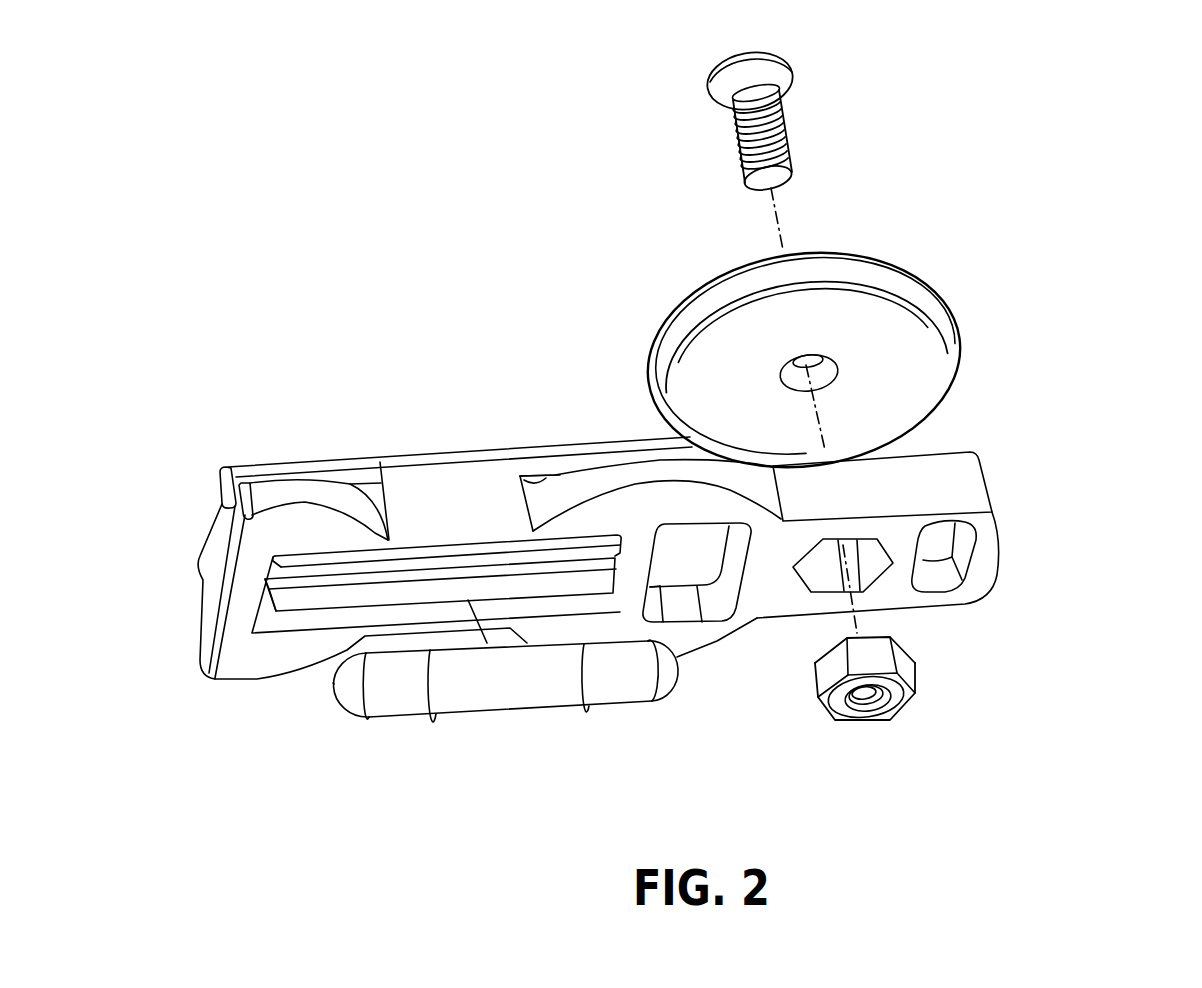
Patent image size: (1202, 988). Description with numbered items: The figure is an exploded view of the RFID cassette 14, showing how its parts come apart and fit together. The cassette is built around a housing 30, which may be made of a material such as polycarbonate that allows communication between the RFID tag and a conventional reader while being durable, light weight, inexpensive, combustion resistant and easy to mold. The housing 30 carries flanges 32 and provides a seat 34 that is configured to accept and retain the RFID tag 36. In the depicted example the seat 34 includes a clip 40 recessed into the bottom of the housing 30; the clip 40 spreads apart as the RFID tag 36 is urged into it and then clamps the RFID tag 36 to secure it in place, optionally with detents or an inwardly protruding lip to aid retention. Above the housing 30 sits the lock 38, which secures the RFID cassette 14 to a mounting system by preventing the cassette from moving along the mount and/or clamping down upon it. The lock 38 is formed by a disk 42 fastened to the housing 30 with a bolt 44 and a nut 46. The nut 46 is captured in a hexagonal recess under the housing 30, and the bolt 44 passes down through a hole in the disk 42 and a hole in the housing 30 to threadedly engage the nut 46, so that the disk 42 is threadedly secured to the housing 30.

The RFID cassette 14 is at (458, 232).
The housing 30 is at (965, 479).
The flanges 32 is at (228, 505).
The seat 34 is at (326, 728).
The RFID tag 36 is at (491, 712).
The lock 38 is at (1038, 330).
The clip 40 is at (313, 597).
The disk 42 is at (884, 272).
The bolt 44 is at (773, 72).
The nut 46 is at (907, 668).